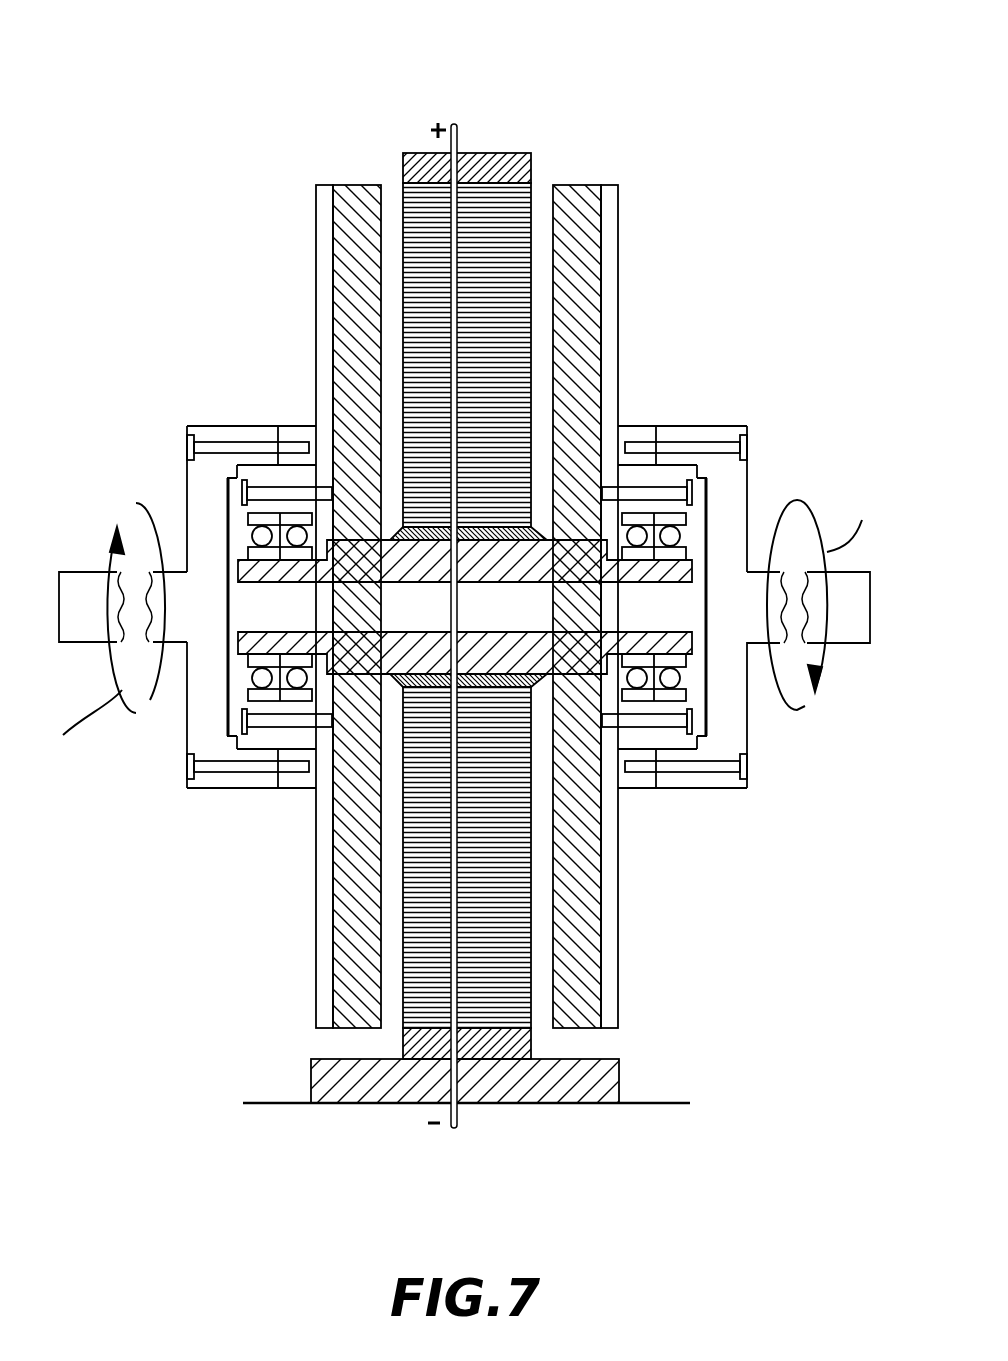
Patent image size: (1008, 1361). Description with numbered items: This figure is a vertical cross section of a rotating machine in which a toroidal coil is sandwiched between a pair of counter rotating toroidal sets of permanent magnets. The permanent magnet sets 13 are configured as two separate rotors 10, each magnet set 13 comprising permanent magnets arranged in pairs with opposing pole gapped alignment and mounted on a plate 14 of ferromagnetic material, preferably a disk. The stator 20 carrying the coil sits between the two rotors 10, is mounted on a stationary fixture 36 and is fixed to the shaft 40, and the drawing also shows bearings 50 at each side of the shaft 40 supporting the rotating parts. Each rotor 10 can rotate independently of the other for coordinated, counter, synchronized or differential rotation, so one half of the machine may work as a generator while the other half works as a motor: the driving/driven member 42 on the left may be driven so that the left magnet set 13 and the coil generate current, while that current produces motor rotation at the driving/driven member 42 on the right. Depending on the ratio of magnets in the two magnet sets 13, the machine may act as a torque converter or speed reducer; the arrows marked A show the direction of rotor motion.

The rotor 10 is at (275, 308).
The magnet set 13 is at (351, 210).
The plate 14 is at (620, 320).
The stator 20 is at (508, 163).
The stationary fixture 36 is at (388, 1078).
The shaft 40 is at (280, 612).
The driving/driven member 42 is at (200, 512).
The bearings 50 is at (637, 533).